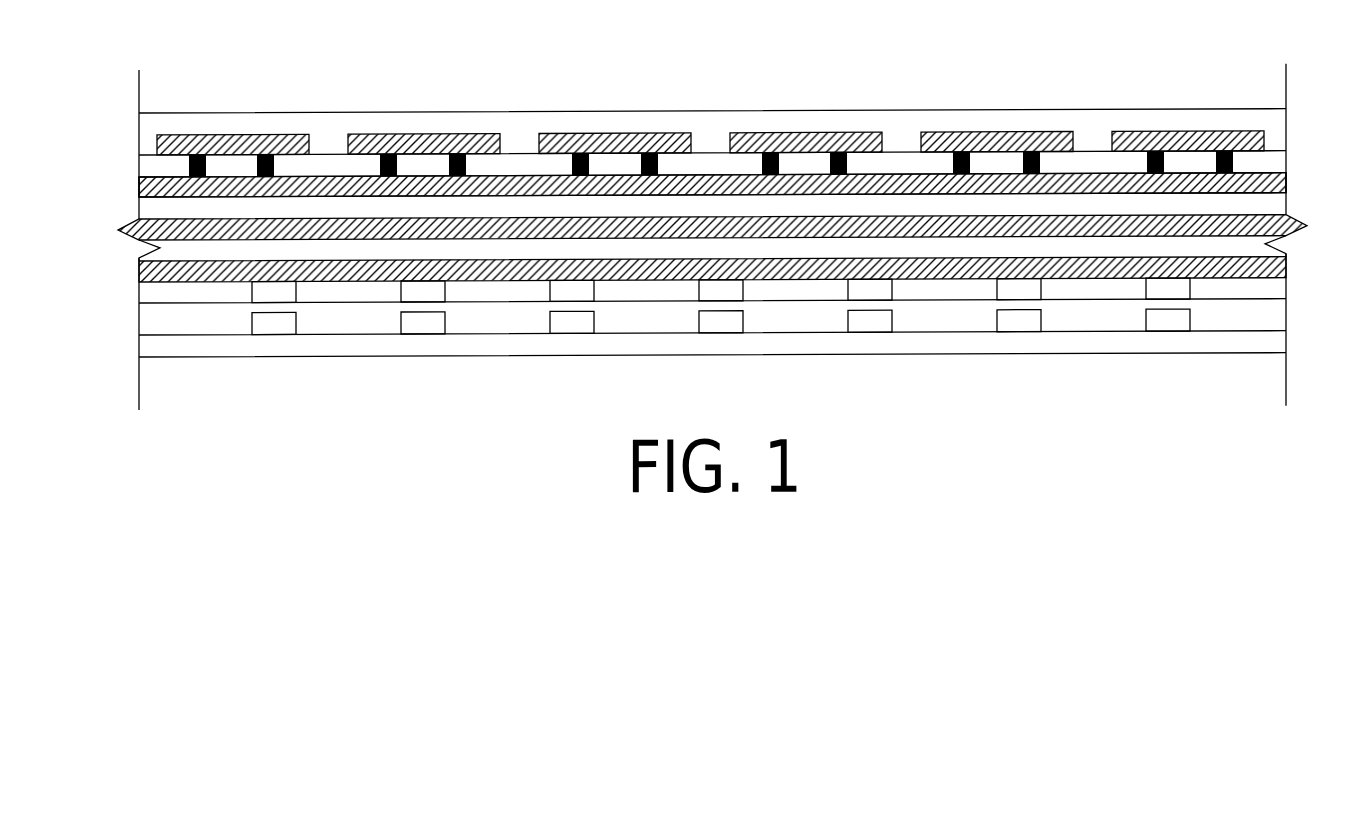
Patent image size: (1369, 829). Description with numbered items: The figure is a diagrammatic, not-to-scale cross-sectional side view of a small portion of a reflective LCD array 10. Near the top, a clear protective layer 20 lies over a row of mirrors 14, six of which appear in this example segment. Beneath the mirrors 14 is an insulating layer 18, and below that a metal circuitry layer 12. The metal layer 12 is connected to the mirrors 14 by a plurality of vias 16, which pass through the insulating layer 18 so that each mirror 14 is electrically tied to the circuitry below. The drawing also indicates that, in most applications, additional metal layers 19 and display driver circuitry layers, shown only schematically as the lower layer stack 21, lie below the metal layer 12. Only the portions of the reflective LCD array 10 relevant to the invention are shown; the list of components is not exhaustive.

The reflective LCD array 10 is at (1184, 449).
The metal layer 12 is at (1273, 184).
The mirrors 14 is at (440, 136).
The vias 16 is at (207, 138).
The insulating layer 18 is at (147, 187).
The additional metal layers 19 is at (1273, 226).
The clear protective layer 20 is at (148, 123).
The backplane layer stack 21 is at (137, 283).